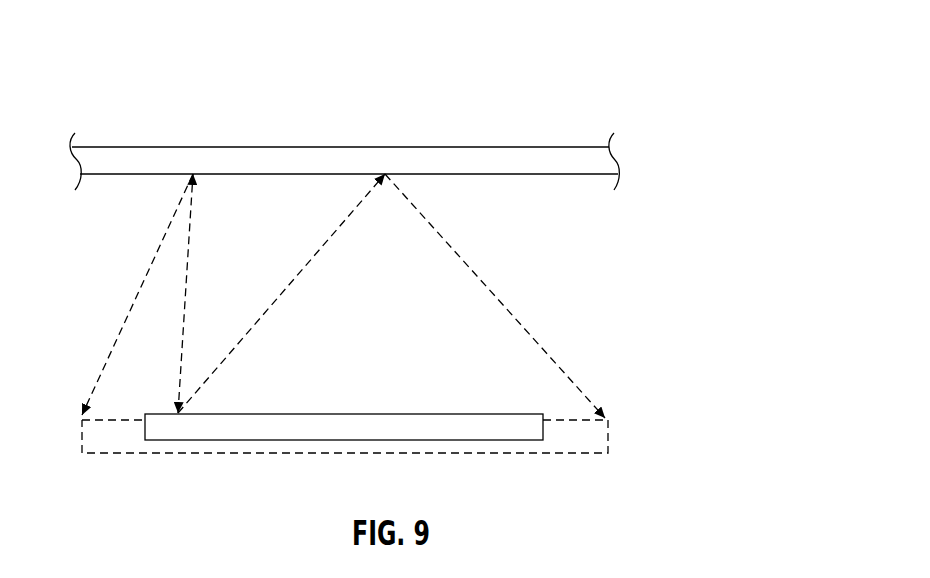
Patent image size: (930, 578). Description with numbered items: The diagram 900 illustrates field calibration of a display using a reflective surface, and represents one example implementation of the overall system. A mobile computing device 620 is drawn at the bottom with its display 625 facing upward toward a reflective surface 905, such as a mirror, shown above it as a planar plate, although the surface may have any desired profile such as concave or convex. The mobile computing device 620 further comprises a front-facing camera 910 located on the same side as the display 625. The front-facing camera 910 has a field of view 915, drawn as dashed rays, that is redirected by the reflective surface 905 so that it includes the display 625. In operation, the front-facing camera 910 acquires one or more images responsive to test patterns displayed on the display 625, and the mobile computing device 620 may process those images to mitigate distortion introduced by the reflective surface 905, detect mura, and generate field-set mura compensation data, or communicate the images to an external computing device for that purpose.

The diagram 900 is at (659, 68).
The reflective surface 905 is at (562, 174).
The field of view 915 is at (322, 245).
The front-facing camera 910 is at (180, 413).
The display 625 is at (488, 413).
The mobile computing device 620 is at (547, 428).